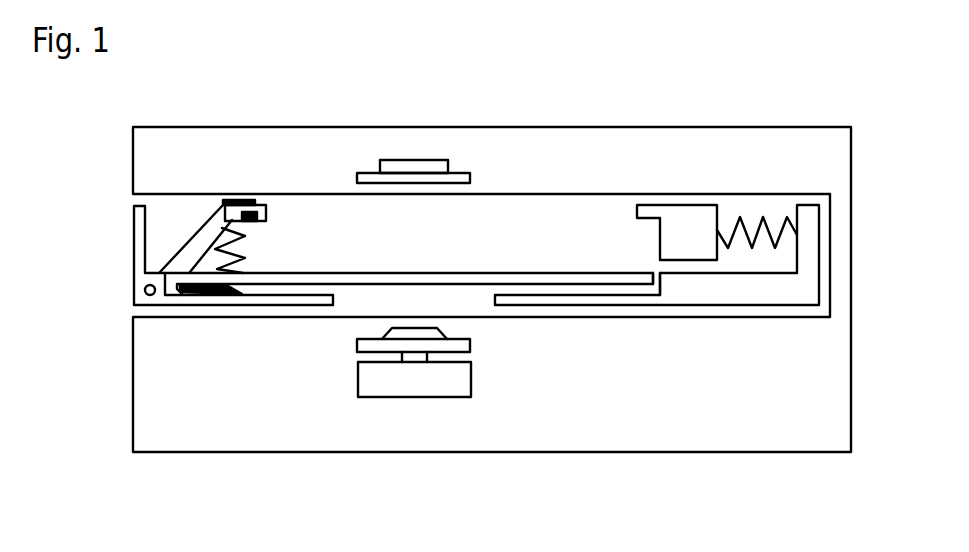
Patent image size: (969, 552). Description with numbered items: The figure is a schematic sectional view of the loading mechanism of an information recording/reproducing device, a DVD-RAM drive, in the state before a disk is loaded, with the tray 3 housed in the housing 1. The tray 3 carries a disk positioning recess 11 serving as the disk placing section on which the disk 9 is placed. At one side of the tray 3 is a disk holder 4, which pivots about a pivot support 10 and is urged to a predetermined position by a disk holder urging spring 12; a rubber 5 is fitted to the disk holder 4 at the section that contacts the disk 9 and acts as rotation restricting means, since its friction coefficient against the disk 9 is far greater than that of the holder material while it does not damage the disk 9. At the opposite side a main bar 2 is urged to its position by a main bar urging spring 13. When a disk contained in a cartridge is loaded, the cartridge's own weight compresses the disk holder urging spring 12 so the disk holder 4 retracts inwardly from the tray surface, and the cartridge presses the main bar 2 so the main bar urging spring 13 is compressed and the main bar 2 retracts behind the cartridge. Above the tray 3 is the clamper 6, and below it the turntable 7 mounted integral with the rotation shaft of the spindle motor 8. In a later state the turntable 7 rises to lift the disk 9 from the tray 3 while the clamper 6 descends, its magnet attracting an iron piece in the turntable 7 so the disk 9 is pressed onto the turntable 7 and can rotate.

The housing 1 is at (192, 147).
The main bar 2 is at (685, 222).
The tray 3 is at (808, 287).
The disk holder 4 is at (195, 245).
The rubber 5 is at (253, 201).
The clamper 6 is at (410, 163).
The turntable 7 is at (467, 345).
The spindle motor 8 is at (413, 380).
The disk 9 is at (444, 273).
The pivot support 10 is at (155, 295).
The disk positioning recess 11 is at (660, 282).
The disk holder urging spring 12 is at (252, 258).
The main bar urging spring 13 is at (745, 222).